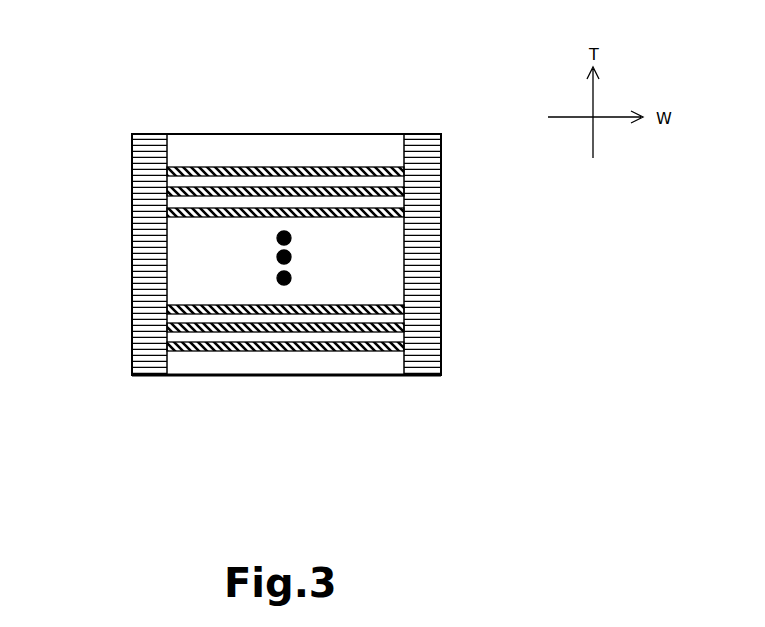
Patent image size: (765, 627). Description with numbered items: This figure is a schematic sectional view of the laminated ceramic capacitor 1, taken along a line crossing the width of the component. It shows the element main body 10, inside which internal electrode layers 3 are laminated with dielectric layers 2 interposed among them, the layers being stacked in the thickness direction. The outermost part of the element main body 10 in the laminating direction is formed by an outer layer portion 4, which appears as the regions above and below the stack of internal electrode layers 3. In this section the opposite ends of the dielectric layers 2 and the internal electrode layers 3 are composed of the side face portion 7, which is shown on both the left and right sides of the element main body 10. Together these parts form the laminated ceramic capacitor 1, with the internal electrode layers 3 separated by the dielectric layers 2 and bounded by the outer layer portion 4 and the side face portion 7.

The laminated ceramic capacitor 1 is at (292, 286).
The dielectric layers 2 is at (253, 183).
The internal electrode layers 3 is at (265, 313).
The outer layer portion 4 is at (382, 150).
The side face portion 7 is at (133, 235).
The element main body 10 is at (232, 379).